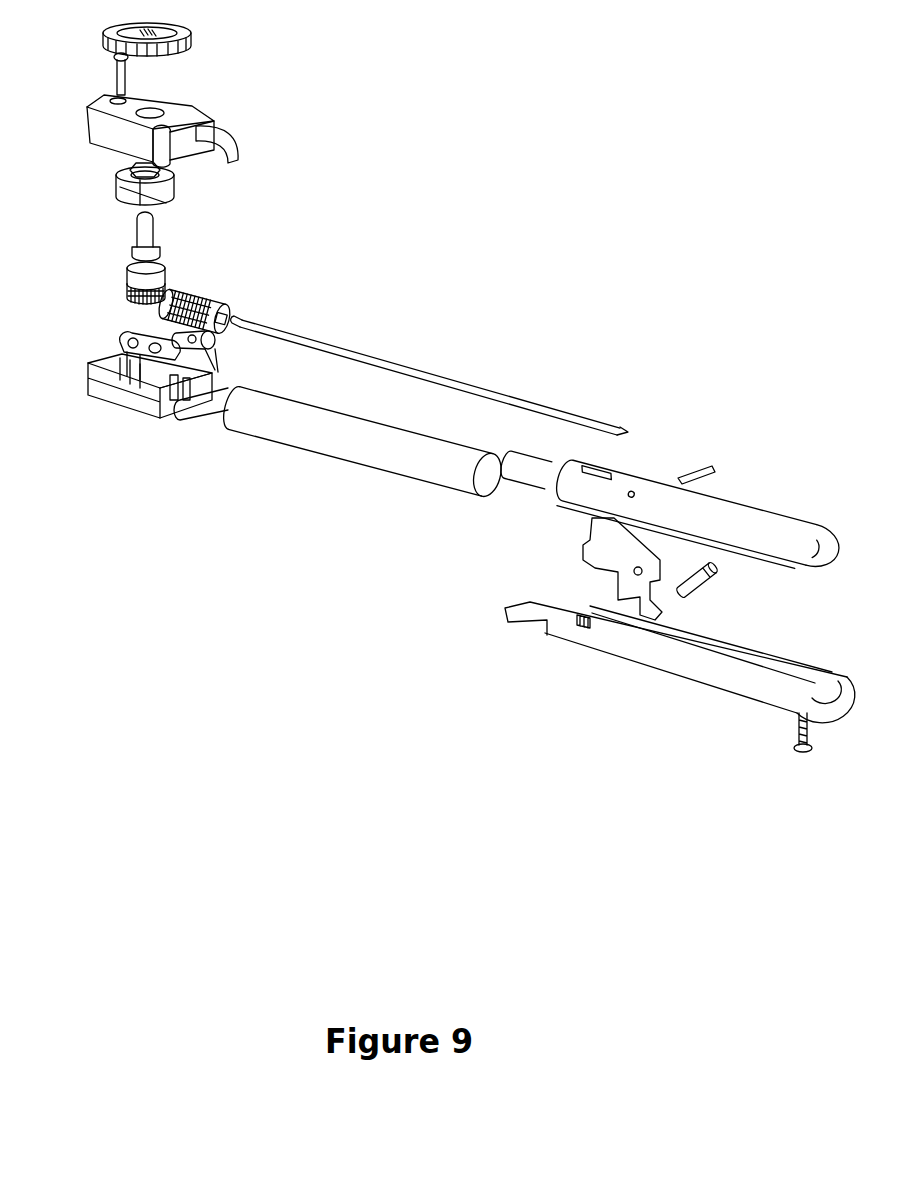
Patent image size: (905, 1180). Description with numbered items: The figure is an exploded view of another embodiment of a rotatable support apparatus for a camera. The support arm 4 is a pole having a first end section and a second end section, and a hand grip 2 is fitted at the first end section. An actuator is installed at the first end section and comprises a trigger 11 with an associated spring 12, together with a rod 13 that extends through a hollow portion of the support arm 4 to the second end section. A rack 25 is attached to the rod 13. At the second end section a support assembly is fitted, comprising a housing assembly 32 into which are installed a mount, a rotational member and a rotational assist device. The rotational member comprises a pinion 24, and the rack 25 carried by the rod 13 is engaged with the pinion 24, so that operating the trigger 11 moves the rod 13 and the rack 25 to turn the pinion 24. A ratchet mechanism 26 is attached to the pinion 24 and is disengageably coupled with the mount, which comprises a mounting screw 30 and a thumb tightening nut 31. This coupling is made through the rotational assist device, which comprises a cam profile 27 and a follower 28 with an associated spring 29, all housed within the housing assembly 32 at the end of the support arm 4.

The hand grip 2 is at (625, 462).
The support arm 4 is at (337, 462).
The trigger 11 is at (609, 580).
The spring 12 is at (726, 575).
The rod 13 is at (416, 356).
The pinion 24 is at (114, 286).
The rack 25 is at (235, 295).
The ratchet mechanism 26 is at (174, 268).
The cam profile 27 is at (104, 182).
The follower 28 is at (104, 337).
The spring 29 is at (236, 345).
The mounting screw 30 is at (164, 242).
The thumb tightening nut 31 is at (204, 41).
The housing assembly 32 is at (228, 116).